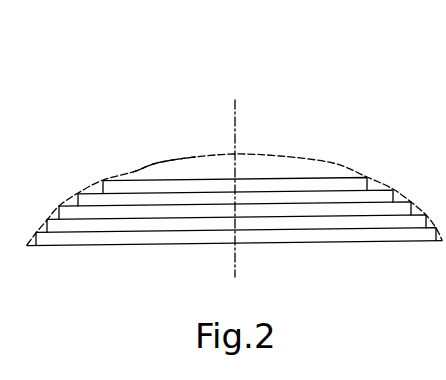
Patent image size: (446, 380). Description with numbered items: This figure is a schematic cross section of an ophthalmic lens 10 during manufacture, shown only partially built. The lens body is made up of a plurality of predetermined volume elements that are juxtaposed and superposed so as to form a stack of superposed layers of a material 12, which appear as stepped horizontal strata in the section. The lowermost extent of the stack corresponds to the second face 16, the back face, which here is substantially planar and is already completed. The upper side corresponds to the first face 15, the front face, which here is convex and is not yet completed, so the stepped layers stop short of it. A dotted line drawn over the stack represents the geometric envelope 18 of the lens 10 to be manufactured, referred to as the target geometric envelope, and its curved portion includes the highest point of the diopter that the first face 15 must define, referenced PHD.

The ophthalmic lens 10 is at (108, 119).
The material 12 is at (115, 187).
The first face 15 is at (331, 162).
The second face 16 is at (305, 242).
The geometric envelope 18 is at (155, 161).
The highest point of the diopter PHD is at (237, 152).